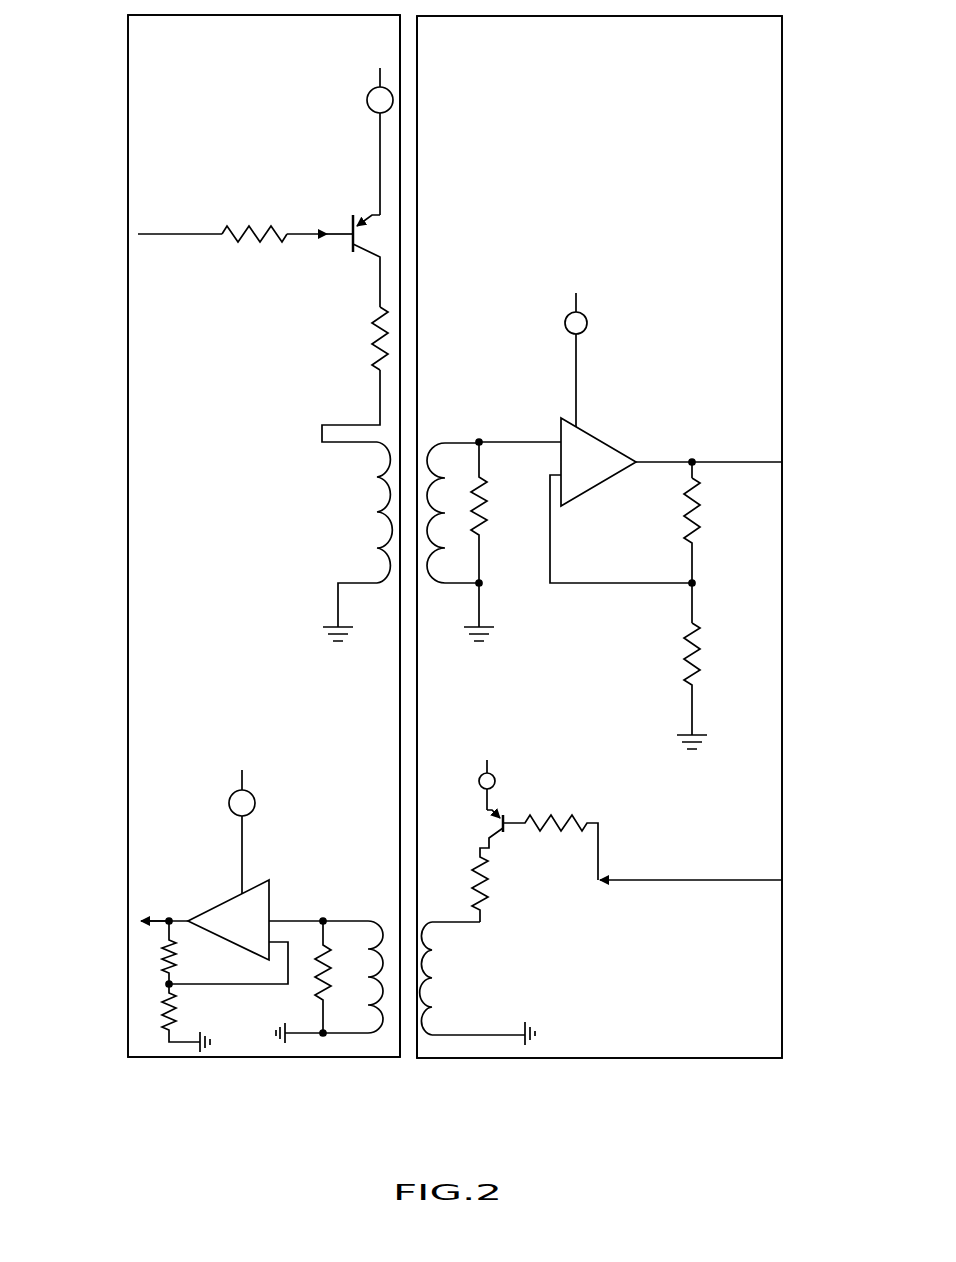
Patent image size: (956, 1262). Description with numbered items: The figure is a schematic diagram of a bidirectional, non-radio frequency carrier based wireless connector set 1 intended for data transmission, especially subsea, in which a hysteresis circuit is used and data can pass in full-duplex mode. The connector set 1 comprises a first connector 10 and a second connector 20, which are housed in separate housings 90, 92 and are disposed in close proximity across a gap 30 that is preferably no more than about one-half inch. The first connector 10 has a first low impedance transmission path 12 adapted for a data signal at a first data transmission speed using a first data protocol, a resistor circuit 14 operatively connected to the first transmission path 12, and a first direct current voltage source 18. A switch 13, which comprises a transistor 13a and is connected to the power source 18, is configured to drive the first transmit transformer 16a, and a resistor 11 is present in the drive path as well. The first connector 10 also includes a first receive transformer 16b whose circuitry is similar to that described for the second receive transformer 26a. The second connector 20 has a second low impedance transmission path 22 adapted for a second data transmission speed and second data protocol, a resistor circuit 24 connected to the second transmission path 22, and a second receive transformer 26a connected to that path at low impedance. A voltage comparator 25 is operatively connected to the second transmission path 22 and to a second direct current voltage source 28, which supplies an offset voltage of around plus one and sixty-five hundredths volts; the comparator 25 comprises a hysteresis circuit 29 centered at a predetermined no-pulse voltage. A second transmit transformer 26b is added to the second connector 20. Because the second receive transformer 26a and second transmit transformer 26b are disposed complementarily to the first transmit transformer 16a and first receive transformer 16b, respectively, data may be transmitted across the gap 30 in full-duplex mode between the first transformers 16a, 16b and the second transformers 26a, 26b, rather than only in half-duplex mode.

The non-radio frequency carrier based wireless connector set 1 is at (100, 388).
The first connector 10 is at (115, 555).
The resistor 11 is at (238, 244).
The first low impedance transmission path 12 is at (181, 233).
The switch 13 is at (350, 212).
The transistor 13a is at (360, 248).
The resistor circuit 14 is at (370, 345).
The first transmit transformer 16a is at (380, 510).
The first receive transformer 16b is at (370, 975).
The first direct current voltage source 18 is at (367, 100).
The second connector 20 is at (790, 428).
The second low impedance transmission path 22 is at (715, 462).
The resistor circuit 24 is at (483, 525).
The voltage comparator 25 is at (598, 430).
The second receive transformer 26a is at (447, 548).
The second transmit transformer 26b is at (440, 977).
The second direct current voltage source 28 is at (565, 323).
The hysteresis circuit 29 is at (598, 490).
The gap 30 is at (408, 150).
The housing 90 is at (128, 155).
The housing 92 is at (782, 157).